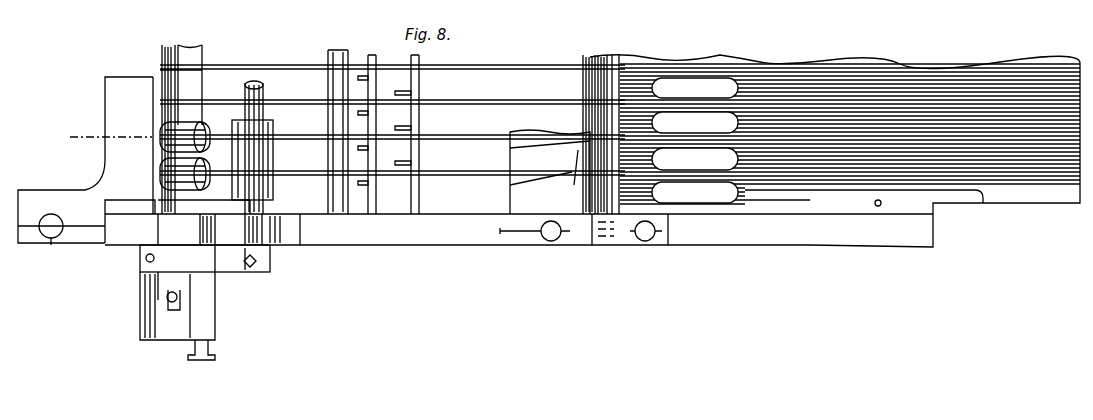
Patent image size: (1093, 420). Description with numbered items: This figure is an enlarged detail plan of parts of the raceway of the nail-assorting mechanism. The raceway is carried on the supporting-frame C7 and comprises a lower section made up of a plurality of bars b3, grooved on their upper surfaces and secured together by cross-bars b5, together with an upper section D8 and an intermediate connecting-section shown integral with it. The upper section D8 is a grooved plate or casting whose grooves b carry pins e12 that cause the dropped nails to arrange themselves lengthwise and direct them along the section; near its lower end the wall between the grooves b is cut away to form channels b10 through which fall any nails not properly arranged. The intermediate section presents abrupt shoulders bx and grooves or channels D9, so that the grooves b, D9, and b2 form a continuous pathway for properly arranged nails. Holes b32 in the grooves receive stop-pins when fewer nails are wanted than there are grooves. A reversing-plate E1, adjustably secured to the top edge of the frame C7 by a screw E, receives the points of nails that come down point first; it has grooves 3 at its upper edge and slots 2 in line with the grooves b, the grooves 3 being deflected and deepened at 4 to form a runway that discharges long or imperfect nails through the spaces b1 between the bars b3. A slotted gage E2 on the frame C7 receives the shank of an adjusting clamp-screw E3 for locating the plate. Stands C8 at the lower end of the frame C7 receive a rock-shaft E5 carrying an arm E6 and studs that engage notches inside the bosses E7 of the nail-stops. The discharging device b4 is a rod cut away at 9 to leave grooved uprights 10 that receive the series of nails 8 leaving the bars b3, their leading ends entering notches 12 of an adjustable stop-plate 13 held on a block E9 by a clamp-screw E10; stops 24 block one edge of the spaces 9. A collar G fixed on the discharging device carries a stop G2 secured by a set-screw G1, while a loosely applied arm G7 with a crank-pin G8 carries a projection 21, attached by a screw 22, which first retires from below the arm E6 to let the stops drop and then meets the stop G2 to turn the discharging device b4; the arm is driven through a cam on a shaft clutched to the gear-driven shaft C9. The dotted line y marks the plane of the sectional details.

The block E9 is at (115, 233).
The clamp-screw E10 is at (41, 243).
The screw E is at (553, 238).
The arm E6 is at (192, 252).
The stands C8 is at (285, 224).
The reversing-plate E1 is at (518, 218).
The adjusting clamp-screw E3 is at (647, 240).
The gage E2 is at (675, 246).
The supporting-frame C7 is at (760, 246).
The deflected and deepened portion of grooves 4 is at (497, 151).
The collar G is at (217, 283).
The arm G7 is at (142, 334).
The crank-pin G8 is at (210, 360).
The stop G2 is at (144, 258).
The set-screw G1 is at (147, 273).
The projection 21 is at (172, 282).
The screw 22 is at (167, 302).
The discharging device b4 is at (192, 121).
The cut-away spaces 9 is at (190, 90).
The uprights or projections 10 is at (160, 61).
The stops 24 is at (160, 72).
The series of nails 8 is at (160, 137).
The notches 12 is at (160, 174).
The adjustable stop-plate 13 is at (104, 152).
The dotted section line y is at (99, 141).
The rock-shaft E5 is at (270, 124).
The bosses E7 is at (275, 153).
The shaft C9 is at (262, 95).
The spaces between raceway-bars b1 is at (392, 120).
The grooves b2 is at (508, 100).
The holes b32 is at (297, 67).
The bars b3 is at (456, 140).
The cross-bars b5 is at (332, 193).
The grooves 3 is at (574, 182).
The slots 2 is at (580, 172).
The grooves or channels D9 is at (563, 100).
The upper raceway section D8 is at (835, 119).
The channels b10 is at (670, 122).
The grooves b is at (672, 82).
The shoulders bx is at (620, 90).
The pins e12 is at (812, 80).